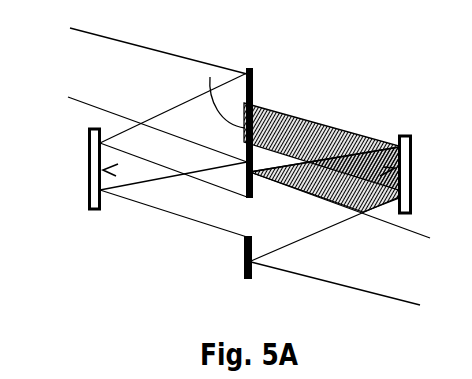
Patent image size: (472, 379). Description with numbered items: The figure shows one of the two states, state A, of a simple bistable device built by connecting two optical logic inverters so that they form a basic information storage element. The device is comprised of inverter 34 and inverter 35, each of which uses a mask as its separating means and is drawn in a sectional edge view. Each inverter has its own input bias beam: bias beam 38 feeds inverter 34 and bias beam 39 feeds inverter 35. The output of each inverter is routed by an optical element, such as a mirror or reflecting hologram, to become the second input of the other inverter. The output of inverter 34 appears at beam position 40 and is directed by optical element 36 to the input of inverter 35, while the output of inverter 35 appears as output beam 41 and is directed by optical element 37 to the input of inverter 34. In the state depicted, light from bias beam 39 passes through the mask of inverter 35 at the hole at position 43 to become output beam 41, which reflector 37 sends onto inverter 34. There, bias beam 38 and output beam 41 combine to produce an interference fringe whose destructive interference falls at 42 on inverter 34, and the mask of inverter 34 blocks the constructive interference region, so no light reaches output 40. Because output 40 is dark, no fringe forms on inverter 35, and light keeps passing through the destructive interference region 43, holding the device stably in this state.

The inverter 34 is at (245, 92).
The inverter 35 is at (253, 247).
The optical element 36 is at (390, 133).
The optical element 37 is at (100, 207).
The input bias beam 38 is at (85, 70).
The input bias beam 39 is at (422, 268).
The output beam position 40 is at (313, 132).
The output beam 41 is at (170, 200).
The destructive interference region 42 is at (210, 77).
The hole at destructive interference position 43 is at (245, 220).